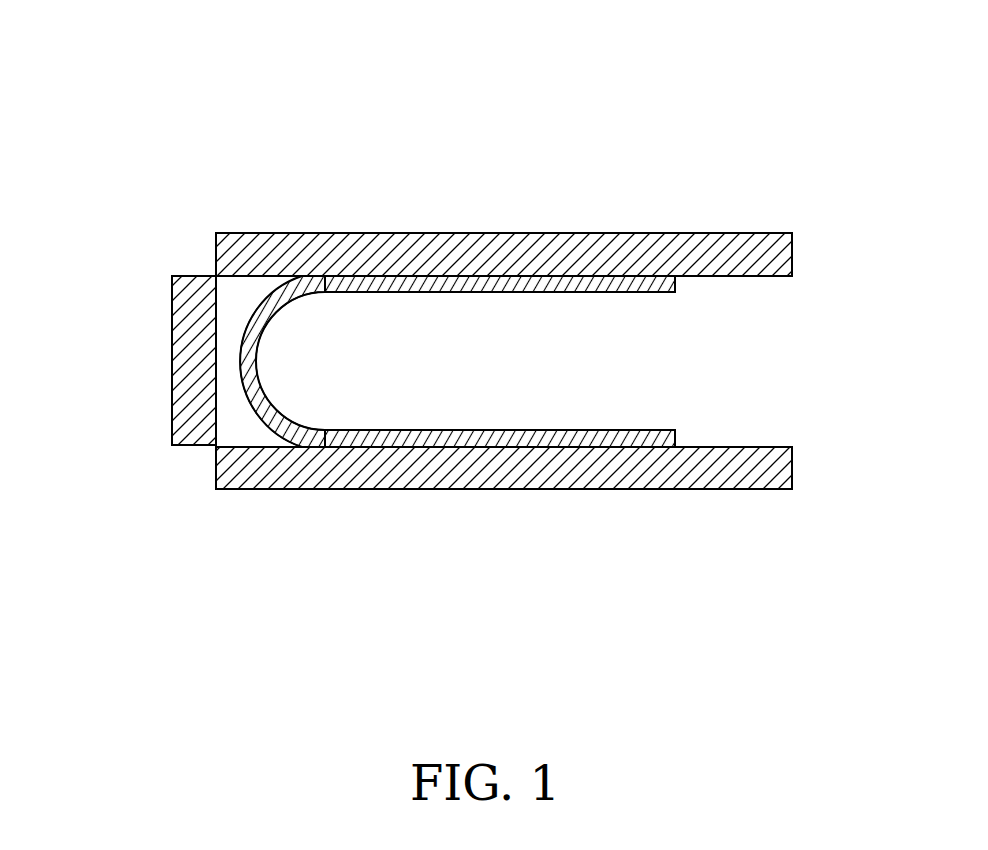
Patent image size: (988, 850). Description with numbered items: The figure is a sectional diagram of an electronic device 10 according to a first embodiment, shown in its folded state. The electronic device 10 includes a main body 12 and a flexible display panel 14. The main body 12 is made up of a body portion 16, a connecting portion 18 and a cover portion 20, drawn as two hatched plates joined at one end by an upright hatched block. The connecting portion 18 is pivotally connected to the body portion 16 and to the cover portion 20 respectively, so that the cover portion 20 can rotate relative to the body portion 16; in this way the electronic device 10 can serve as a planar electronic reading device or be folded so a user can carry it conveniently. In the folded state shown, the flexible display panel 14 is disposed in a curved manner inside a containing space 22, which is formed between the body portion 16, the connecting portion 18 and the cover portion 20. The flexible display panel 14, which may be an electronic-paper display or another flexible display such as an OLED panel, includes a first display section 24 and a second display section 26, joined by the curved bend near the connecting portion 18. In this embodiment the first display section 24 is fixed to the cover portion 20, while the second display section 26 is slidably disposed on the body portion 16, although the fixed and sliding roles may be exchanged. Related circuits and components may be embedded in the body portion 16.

The electronic device 10 is at (792, 76).
The main body 12 is at (122, 230).
The flexible display panel 14 is at (568, 183).
The body portion 16 is at (226, 473).
The connecting portion 18 is at (188, 361).
The cover portion 20 is at (228, 248).
The containing space 22 is at (768, 336).
The first display section 24 is at (549, 288).
The second display section 26 is at (479, 440).